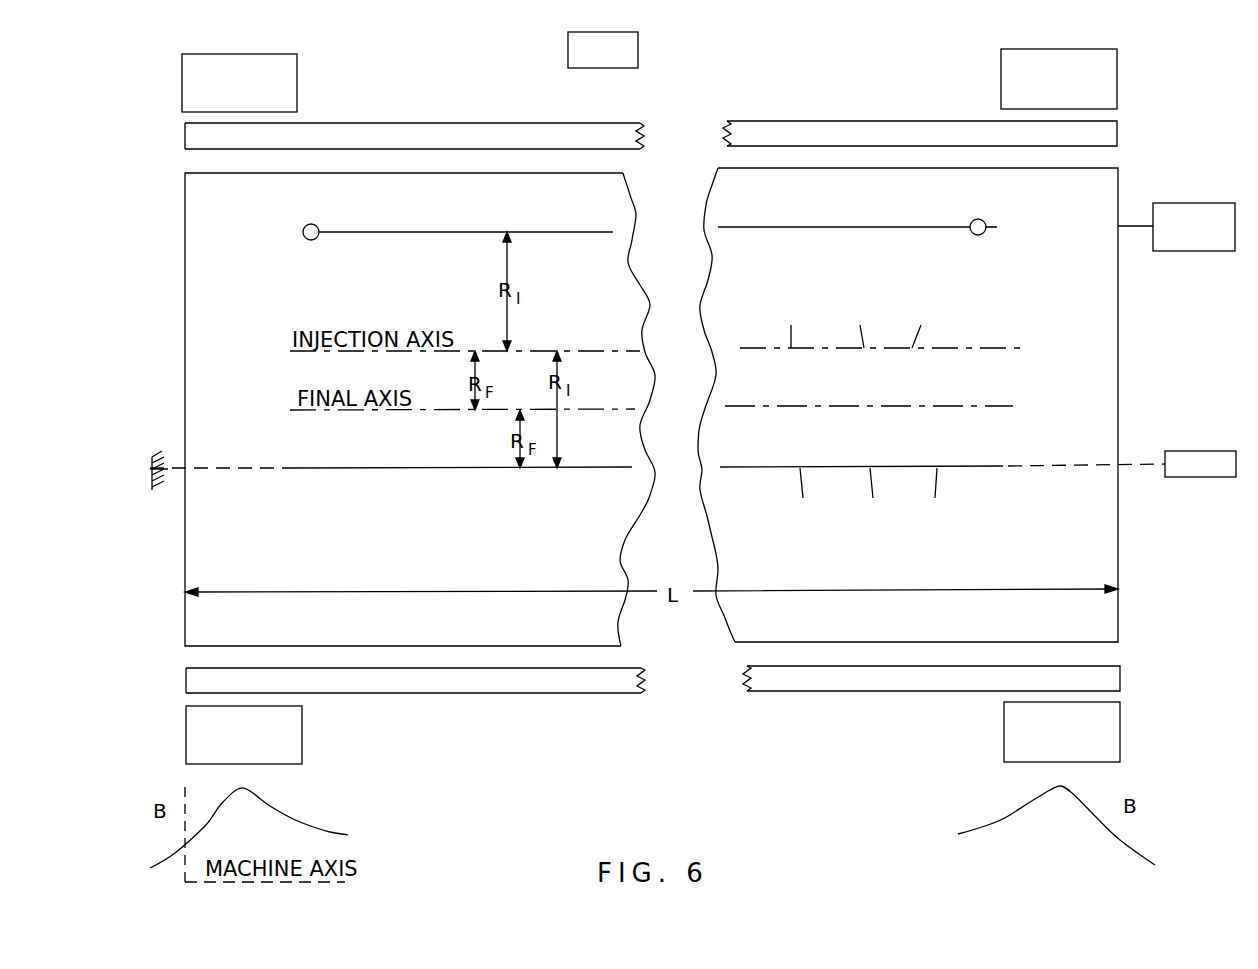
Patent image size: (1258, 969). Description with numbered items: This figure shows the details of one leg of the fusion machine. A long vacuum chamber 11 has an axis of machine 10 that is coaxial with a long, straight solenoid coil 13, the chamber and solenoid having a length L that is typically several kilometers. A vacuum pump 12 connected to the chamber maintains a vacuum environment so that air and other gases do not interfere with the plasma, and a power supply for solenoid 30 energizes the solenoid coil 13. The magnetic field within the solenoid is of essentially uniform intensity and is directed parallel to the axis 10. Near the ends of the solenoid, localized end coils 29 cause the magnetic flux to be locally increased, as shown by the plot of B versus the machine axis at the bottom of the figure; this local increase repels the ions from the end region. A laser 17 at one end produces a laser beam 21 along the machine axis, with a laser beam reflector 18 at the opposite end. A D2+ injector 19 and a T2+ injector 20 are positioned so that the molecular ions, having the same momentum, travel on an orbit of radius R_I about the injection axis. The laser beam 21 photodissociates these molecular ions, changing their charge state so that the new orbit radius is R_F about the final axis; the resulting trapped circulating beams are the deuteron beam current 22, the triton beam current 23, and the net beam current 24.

The axis of machine 10 is at (899, 406).
The vacuum chamber 11 is at (1118, 181).
The vacuum pump 12 is at (1218, 203).
The solenoid coil 13 is at (446, 123).
The laser 17 is at (1207, 451).
The laser beam reflector 18 is at (158, 490).
The D2+ injector 19 is at (305, 226).
The T2+ injector 20 is at (984, 220).
The laser beam 21 is at (168, 462).
The deuteron beam current 22 is at (795, 412).
The triton beam current 23 is at (865, 412).
The net beam current 24 is at (924, 412).
The localized end coil 29 is at (297, 99).
The power supply for solenoid 30 is at (633, 68).